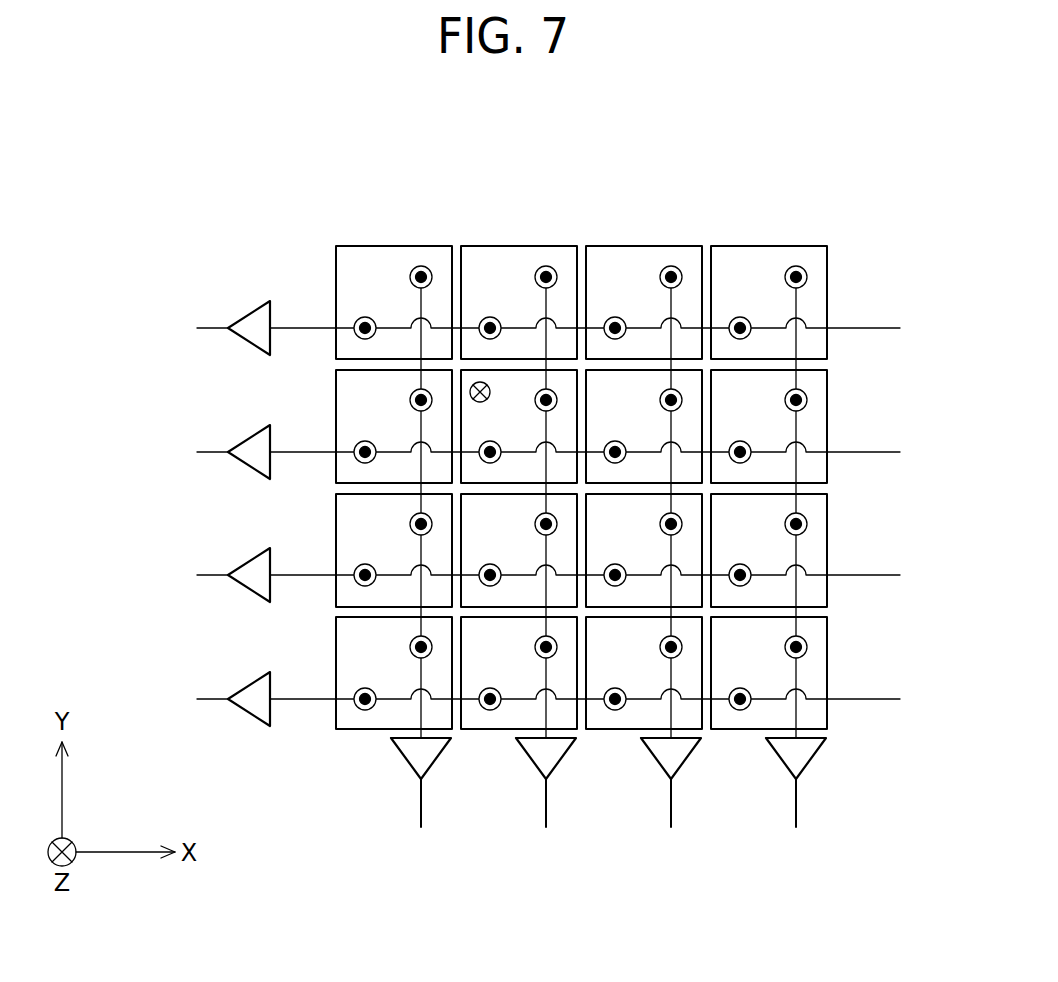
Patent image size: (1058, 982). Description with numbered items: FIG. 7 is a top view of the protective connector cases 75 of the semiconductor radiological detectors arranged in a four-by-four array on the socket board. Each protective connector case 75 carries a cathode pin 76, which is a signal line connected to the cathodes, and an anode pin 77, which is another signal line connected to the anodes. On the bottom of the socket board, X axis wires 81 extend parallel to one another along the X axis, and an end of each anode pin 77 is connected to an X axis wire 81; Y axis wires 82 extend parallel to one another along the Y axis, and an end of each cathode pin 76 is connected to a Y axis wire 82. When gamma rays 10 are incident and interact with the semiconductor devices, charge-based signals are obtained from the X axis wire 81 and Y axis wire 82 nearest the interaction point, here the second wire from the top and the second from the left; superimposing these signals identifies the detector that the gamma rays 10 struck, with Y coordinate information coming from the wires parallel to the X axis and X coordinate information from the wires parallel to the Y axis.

The gamma rays 10 is at (480, 382).
The protective connector case 75 is at (765, 405).
The cathode pin 76 is at (493, 588).
The anode pin 77 is at (808, 402).
The X axis wire 81 is at (212, 575).
The Y axis wire 82 is at (673, 806).